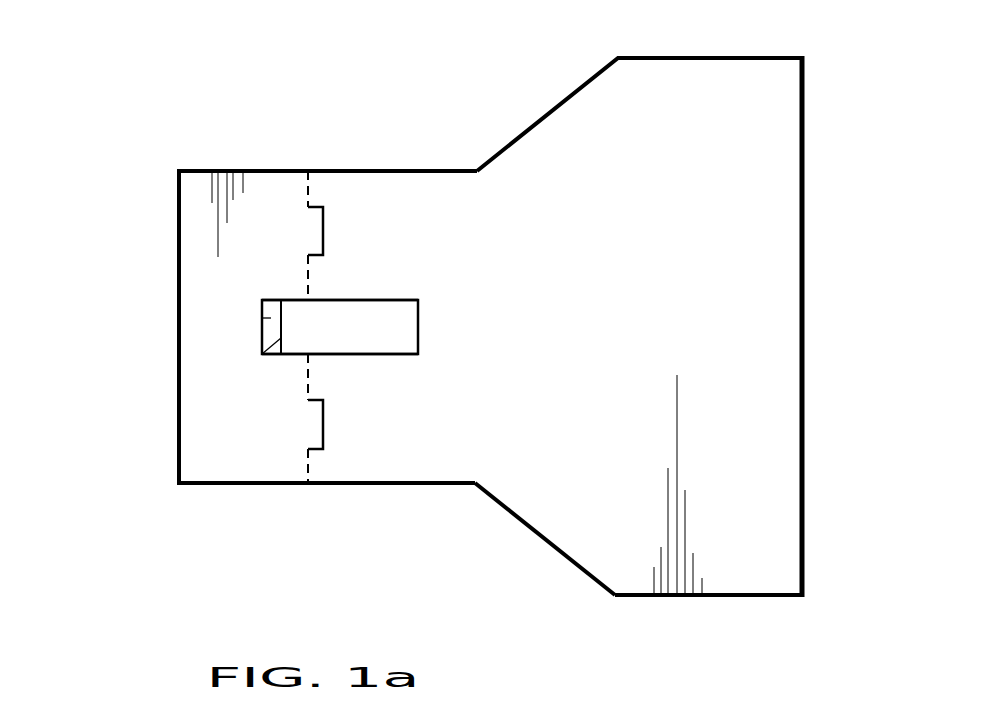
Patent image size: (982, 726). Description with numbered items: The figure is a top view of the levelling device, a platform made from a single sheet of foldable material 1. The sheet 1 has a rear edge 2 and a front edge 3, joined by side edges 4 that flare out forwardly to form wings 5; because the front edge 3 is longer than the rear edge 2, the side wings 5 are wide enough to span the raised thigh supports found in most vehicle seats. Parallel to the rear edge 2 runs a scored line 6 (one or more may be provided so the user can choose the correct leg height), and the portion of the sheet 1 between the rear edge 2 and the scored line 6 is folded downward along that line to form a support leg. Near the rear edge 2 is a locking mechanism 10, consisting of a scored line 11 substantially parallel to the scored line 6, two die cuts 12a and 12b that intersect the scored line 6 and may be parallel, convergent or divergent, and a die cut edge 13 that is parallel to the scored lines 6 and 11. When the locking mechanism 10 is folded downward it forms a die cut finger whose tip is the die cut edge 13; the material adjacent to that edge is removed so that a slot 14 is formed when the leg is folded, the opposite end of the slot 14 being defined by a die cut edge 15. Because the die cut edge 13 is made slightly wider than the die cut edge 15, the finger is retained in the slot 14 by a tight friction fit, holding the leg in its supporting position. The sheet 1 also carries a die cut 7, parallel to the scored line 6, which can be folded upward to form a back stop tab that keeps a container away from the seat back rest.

The sheet of foldable material 1 is at (738, 178).
The rear edge 2 is at (178, 346).
The front edge 3 is at (803, 451).
The side edges 4 is at (453, 485).
The wings 5 is at (695, 597).
The scored line 6 is at (307, 378).
The die cut 7 is at (323, 231).
The locking mechanism 10 is at (334, 350).
The scored line 11 is at (418, 325).
The die cut 12a is at (377, 301).
The die cut 12b is at (347, 355).
The die cut edge 13 is at (262, 354).
The slot 14 is at (271, 318).
The die cut edge 15 is at (262, 333).